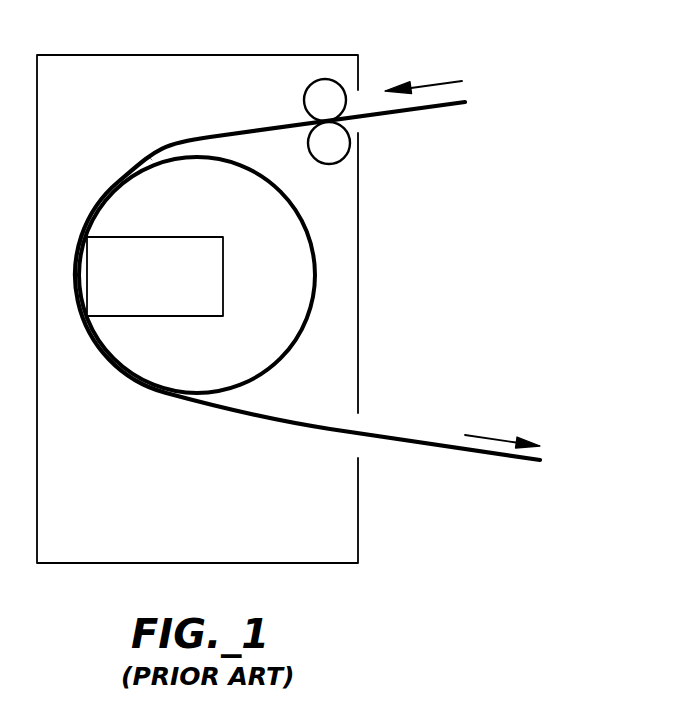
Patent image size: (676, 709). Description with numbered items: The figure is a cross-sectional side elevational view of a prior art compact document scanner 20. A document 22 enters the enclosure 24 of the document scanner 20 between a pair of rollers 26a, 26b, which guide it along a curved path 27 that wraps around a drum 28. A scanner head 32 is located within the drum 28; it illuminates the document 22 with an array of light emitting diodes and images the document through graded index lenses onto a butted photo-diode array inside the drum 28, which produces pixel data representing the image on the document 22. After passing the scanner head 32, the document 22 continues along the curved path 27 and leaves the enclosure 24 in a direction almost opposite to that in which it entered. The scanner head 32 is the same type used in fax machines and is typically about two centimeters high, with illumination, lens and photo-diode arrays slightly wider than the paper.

The document scanner 20 is at (333, 585).
The document 22 is at (407, 116).
The enclosure 24 is at (181, 55).
The roller 26a is at (343, 162).
The roller 26b is at (323, 80).
The curved path 27 is at (172, 145).
The drum 28 is at (282, 368).
The scanner head 32 is at (195, 237).